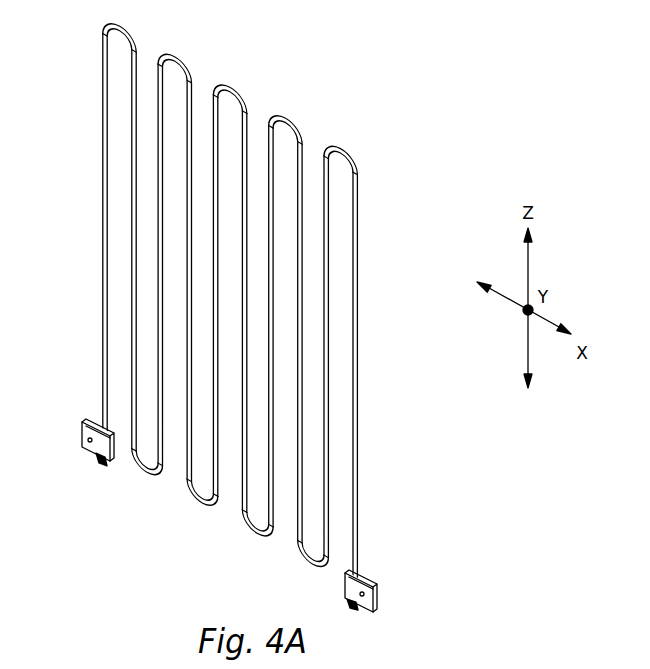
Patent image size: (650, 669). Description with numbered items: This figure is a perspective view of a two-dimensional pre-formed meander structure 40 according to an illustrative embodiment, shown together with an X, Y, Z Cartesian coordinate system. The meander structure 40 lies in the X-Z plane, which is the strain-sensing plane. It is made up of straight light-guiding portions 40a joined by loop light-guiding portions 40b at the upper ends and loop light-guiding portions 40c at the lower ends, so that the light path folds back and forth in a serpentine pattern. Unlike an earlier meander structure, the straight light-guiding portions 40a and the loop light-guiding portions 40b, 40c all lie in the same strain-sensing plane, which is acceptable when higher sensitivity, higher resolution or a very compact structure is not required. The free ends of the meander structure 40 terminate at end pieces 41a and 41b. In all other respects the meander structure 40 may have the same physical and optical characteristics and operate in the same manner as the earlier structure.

The pre-formed meander structure 40 is at (398, 98).
The straight light-guiding portions 40a is at (104, 205).
The loop light-guiding portions 40b is at (116, 25).
The loop light-guiding portions 40c is at (135, 458).
The first terminal 41a is at (366, 580).
The second terminal 41b is at (84, 421).